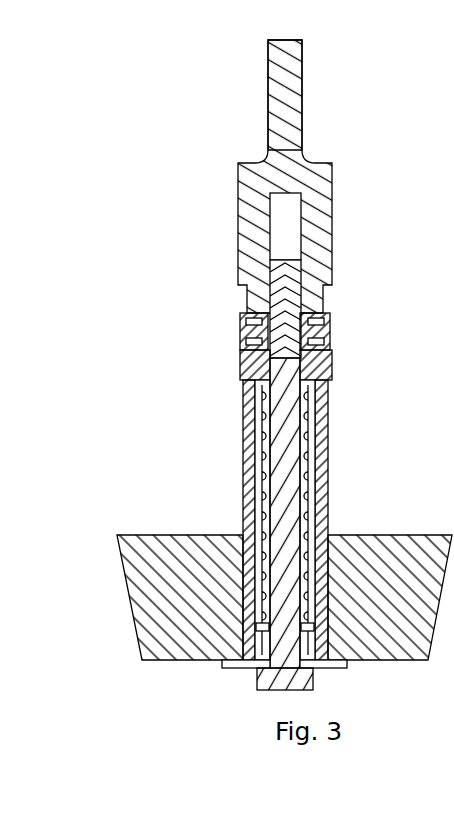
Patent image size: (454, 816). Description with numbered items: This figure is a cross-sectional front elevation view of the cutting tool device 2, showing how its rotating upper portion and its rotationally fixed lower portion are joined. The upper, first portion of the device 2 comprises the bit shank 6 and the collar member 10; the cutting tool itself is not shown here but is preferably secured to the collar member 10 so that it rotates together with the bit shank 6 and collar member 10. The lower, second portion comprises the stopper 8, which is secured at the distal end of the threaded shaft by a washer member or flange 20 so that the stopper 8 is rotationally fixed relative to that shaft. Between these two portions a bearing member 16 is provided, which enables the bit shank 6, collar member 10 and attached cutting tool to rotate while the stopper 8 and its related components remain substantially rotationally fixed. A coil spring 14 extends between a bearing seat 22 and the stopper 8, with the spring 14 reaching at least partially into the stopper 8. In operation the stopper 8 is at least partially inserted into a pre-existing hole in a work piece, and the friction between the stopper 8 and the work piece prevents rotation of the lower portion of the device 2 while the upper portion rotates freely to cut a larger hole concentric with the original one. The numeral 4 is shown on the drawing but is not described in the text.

The device 2 is at (170, 498).
The upper housing part 4 is at (225, 256).
The bit shank 6 is at (252, 122).
The stopper 8 is at (150, 608).
The collar member 10 is at (225, 216).
The coil spring 14 is at (313, 495).
The bearing member 16 is at (323, 332).
The flange 20 is at (355, 661).
The bearing seat 22 is at (237, 362).